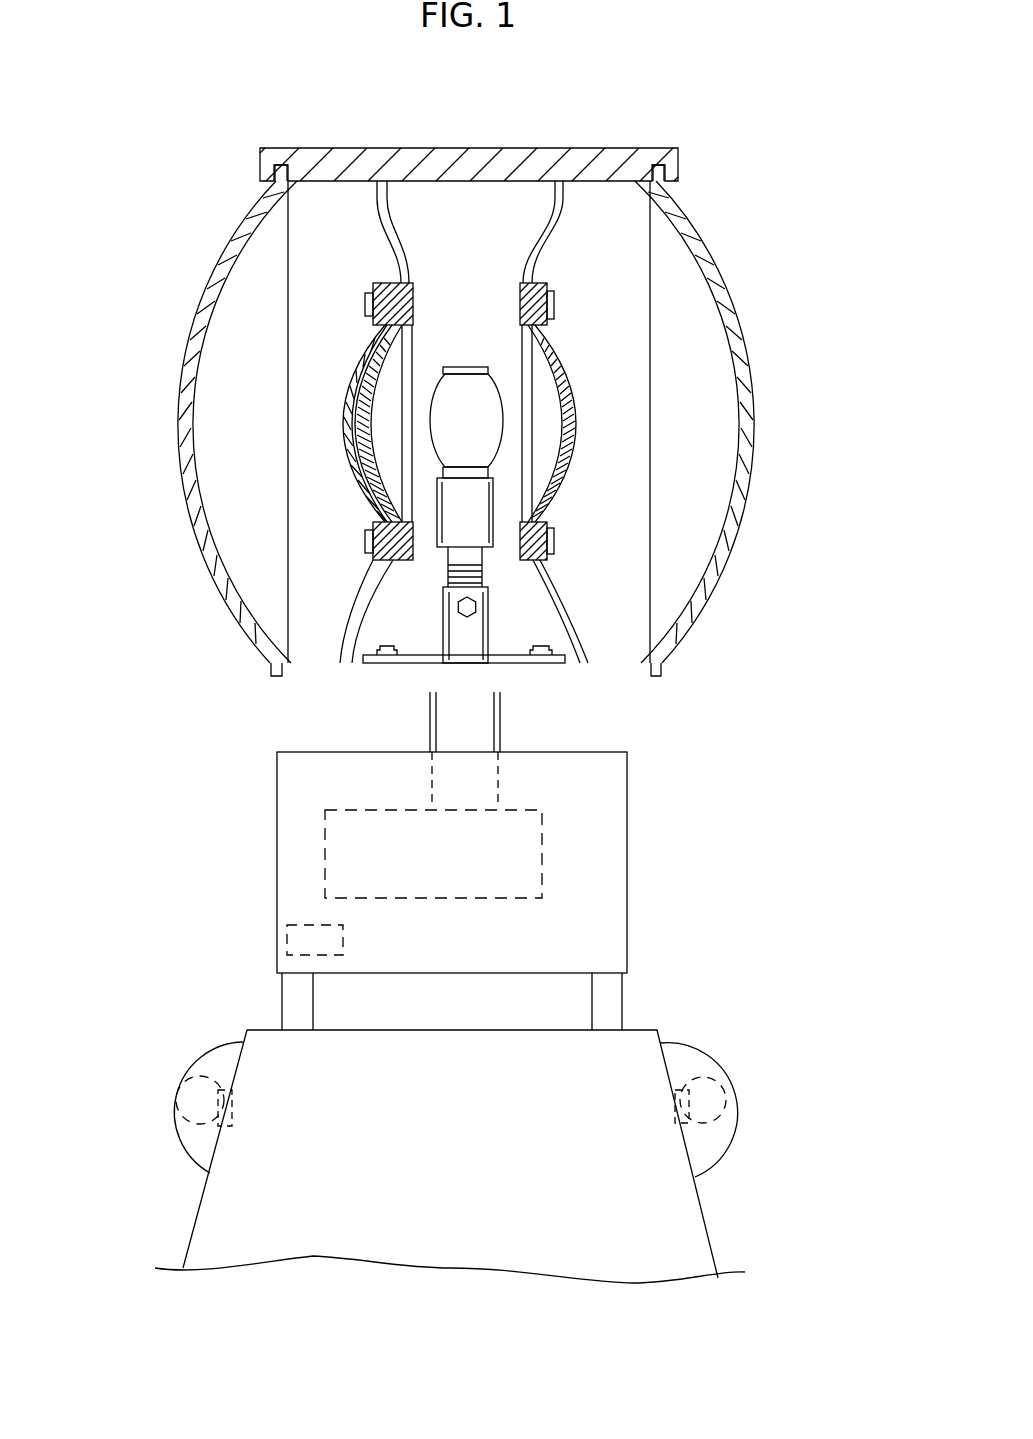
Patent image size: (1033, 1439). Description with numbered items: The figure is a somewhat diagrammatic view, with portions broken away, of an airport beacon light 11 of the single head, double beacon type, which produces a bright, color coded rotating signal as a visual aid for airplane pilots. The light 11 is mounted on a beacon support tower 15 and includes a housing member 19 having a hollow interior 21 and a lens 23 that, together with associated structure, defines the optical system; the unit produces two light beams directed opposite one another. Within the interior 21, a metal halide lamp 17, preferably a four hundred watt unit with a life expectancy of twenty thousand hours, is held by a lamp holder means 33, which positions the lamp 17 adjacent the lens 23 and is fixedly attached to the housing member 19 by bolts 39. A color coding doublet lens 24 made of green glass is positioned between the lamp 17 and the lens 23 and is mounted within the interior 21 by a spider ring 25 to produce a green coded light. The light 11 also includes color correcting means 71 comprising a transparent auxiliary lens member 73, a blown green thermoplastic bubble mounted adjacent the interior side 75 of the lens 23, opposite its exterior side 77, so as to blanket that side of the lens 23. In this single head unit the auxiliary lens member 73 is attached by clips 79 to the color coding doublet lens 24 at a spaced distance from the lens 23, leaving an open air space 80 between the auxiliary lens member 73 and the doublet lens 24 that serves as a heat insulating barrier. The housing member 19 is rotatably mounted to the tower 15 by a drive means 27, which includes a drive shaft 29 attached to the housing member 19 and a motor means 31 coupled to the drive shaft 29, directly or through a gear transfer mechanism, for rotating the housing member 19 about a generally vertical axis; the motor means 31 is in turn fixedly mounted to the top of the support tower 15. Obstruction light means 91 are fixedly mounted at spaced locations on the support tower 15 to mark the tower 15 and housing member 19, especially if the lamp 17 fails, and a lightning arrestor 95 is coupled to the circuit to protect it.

The airport beacon light 11 is at (790, 114).
The beacon support tower 15 is at (670, 1213).
The metal halide lamp 17 is at (468, 368).
The housing member 19 is at (607, 160).
The hollow interior 21 is at (610, 251).
The lens 23 is at (222, 263).
The color coding doublet lens 24 is at (367, 507).
The spider ring 25 is at (414, 287).
The drive means 27 is at (683, 785).
The drive shaft 29 is at (472, 729).
The motor means 31 is at (530, 862).
The lamp holder means 33 is at (512, 613).
The bolts 39 is at (390, 650).
The color correcting means 71 is at (370, 352).
The auxiliary lens member 73 is at (352, 480).
The interior side 75 is at (252, 464).
The exterior side 77 is at (185, 401).
The clips 79 is at (372, 300).
The open air space 80 is at (352, 440).
The obstruction light means 91 is at (167, 1081).
The lightning arrestor 95 is at (286, 934).